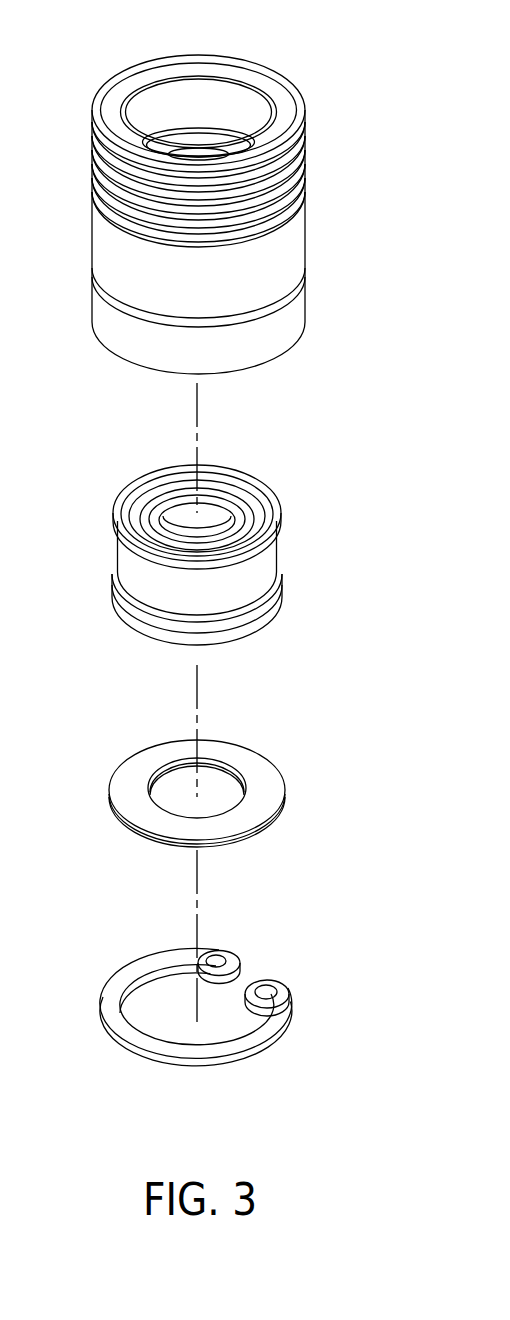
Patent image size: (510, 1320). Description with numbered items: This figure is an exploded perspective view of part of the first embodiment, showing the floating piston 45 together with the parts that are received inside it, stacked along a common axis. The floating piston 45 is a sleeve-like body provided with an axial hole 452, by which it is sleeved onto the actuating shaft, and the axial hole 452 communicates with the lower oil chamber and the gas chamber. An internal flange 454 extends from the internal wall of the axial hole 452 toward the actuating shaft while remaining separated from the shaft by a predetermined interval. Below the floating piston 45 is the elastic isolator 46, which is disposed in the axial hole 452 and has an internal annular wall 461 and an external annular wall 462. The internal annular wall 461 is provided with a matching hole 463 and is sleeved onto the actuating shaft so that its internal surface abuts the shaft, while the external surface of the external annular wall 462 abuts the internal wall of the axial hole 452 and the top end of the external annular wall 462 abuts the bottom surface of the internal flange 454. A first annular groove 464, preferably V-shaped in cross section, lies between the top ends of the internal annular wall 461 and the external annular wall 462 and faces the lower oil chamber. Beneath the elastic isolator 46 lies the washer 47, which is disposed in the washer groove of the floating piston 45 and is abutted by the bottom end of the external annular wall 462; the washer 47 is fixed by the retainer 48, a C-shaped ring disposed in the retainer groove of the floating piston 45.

The floating piston 45 is at (237, 187).
The axial hole 452 is at (143, 108).
The internal flange 454 is at (228, 147).
The elastic isolator 46 is at (258, 513).
The internal annular wall 461 is at (240, 523).
The external annular wall 462 is at (268, 527).
The matching hole 463 is at (210, 525).
The first annular groove 464 is at (245, 505).
The washer 47 is at (267, 793).
The retainer 48 is at (263, 1035).